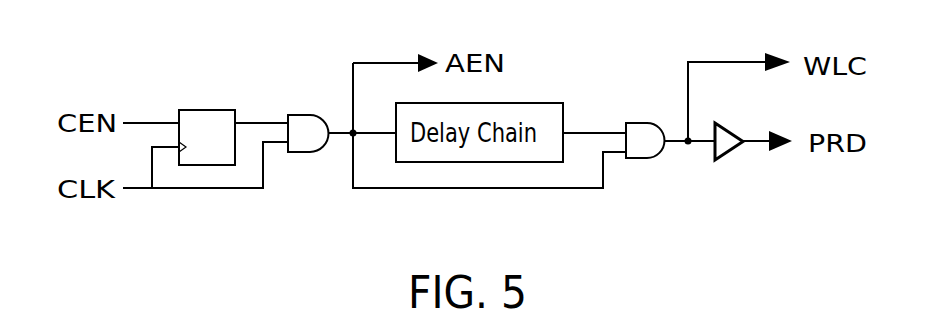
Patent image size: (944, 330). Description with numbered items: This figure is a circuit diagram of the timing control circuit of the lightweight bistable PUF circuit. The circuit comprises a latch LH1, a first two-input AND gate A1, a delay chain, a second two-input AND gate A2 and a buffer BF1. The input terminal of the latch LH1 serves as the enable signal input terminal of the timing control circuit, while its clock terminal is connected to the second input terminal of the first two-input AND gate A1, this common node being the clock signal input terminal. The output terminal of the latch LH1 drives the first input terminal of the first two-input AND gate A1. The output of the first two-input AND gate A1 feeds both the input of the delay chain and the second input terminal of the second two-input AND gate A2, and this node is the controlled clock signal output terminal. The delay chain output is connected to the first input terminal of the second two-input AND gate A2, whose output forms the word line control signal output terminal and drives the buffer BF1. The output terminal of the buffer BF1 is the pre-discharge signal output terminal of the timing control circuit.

The latch LH1 is at (207, 120).
The first two-input AND gate A1 is at (308, 149).
The second two-input AND gate A2 is at (645, 159).
The buffer BF1 is at (732, 159).